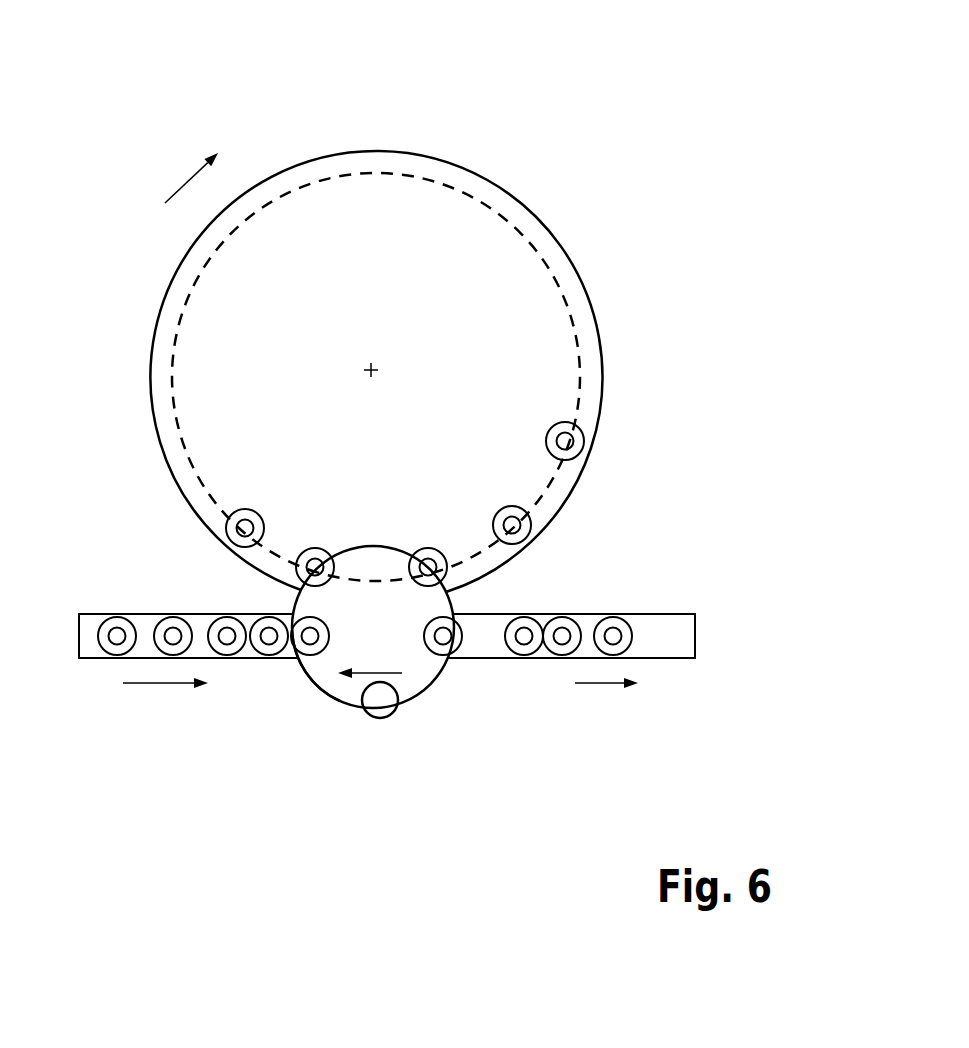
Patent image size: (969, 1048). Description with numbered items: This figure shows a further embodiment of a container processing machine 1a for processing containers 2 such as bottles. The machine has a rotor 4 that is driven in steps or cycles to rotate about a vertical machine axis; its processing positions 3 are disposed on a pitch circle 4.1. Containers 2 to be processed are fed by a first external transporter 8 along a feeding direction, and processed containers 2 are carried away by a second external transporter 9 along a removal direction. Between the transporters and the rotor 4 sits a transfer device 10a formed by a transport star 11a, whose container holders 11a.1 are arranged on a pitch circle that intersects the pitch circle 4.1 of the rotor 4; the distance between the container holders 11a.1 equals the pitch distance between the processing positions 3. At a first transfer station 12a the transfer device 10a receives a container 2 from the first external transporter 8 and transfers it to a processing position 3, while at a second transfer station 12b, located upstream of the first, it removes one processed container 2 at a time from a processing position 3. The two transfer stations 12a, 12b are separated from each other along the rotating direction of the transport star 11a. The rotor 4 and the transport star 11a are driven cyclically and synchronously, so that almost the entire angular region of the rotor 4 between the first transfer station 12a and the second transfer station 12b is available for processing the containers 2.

The container processing machine 1a is at (554, 99).
The rotor 4 is at (510, 290).
The pitch circle 4.1 is at (345, 175).
The processing position 3 is at (607, 437).
The first transfer station 12a is at (280, 518).
The second transfer station 12b is at (470, 516).
The container 2 is at (205, 613).
The first external transporter 8 is at (90, 652).
The second external transporter 9 is at (672, 630).
The transfer device 10a is at (456, 706).
The transport star 11a is at (328, 682).
The container holder 11a.1 is at (382, 705).